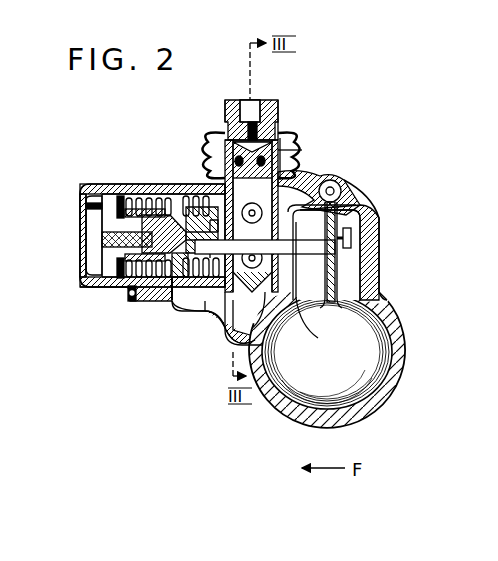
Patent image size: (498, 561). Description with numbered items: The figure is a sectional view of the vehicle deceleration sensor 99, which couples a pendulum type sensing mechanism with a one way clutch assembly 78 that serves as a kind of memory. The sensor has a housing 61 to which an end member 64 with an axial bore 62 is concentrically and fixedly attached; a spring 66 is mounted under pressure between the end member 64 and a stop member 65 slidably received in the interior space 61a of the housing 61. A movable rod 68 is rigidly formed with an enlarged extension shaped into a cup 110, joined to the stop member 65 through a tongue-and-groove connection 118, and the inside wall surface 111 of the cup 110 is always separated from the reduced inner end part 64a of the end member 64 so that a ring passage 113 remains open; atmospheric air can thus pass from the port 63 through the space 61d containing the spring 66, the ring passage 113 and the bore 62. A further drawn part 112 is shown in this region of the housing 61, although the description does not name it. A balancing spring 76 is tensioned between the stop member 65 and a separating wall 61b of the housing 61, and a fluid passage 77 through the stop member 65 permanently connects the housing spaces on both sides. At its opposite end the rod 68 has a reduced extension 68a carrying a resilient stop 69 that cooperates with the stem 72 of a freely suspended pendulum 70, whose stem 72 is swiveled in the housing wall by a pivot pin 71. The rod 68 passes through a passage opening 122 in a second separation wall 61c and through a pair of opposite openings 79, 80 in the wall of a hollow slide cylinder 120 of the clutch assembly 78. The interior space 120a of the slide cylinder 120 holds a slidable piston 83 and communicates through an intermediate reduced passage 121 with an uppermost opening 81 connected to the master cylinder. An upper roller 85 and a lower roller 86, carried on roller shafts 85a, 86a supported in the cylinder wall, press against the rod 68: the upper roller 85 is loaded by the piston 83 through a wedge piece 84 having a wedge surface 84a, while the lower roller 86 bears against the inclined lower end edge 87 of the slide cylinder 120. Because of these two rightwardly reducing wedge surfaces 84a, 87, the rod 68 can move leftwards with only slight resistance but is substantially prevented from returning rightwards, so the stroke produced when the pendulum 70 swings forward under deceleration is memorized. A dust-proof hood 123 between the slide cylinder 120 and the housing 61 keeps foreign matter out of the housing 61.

The housing 61 is at (95, 185).
The interior space of housing 61a is at (218, 180).
The separating wall 61b is at (222, 178).
The second separation wall 61c is at (280, 298).
The space containing spring 61d is at (110, 288).
The axial bore 62 is at (106, 238).
The port 63 is at (127, 299).
The end member 64 is at (98, 203).
The reduced inner end part of end member 64a is at (100, 213).
The stop member 65 is at (186, 198).
The spring 66 is at (140, 200).
The movable rod 68 is at (327, 285).
The reduced extension of rod 68a is at (338, 275).
The resilient stop 69 is at (361, 262).
The pendulum 70 is at (362, 368).
The pivot pin 71 is at (335, 191).
The stem of pendulum 72 is at (380, 290).
The balancing spring 76 is at (204, 302).
The fluid passage 77 is at (184, 280).
The one way clutch assembly 78 is at (279, 136).
The opening 79 is at (216, 278).
The opening 80 is at (270, 262).
The uppermost opening 81 is at (246, 100).
The piston 83 is at (302, 172).
The wedge piece 84 is at (347, 181).
The wedge surface 84a is at (300, 180).
The upper roller 85 is at (339, 240).
The roller shaft 85a is at (342, 182).
The lower roller 86 is at (232, 322).
The roller shaft 86a is at (262, 325).
The inclined lower end edge 87 is at (225, 330).
The deceleration sensor 99 is at (326, 88).
The cup 110 is at (128, 200).
The inside wall surface of cup 111 is at (170, 282).
The washer 112 is at (160, 200).
The ring passage 113 is at (150, 242).
The tongue-and-groove connection 118 is at (176, 198).
The slide cylinder 120 is at (294, 168).
The interior space of slide cylinder 120a is at (260, 130).
The intermediate reduced passage 121 is at (230, 140).
The passage opening 122 is at (351, 236).
The dust-proof hood 123 is at (292, 160).